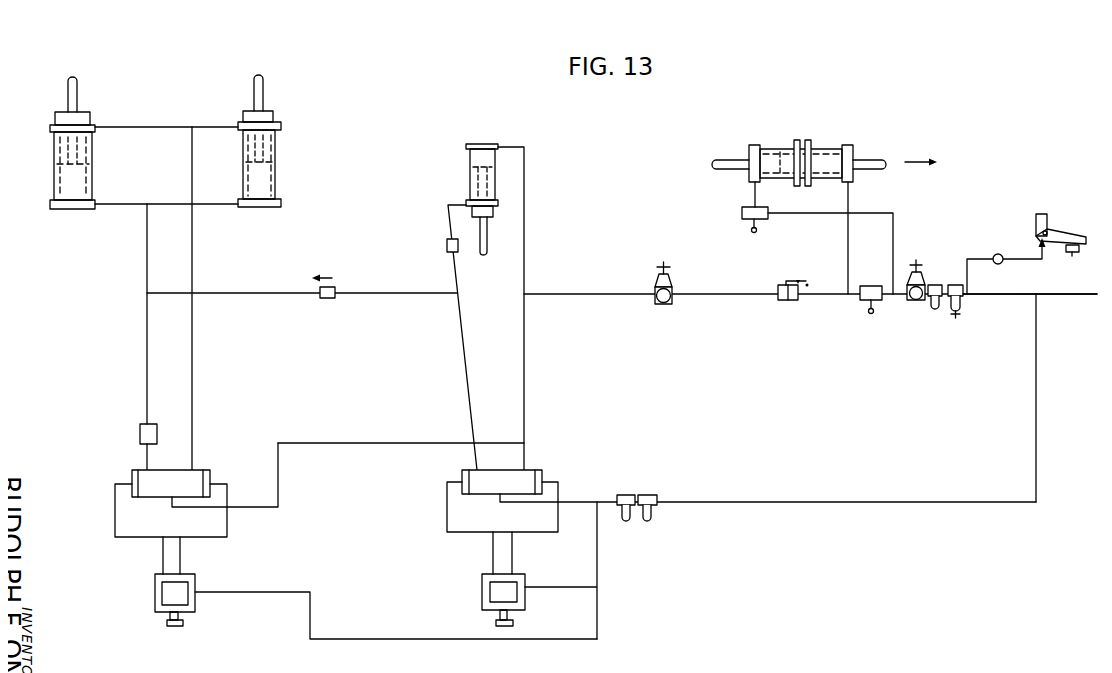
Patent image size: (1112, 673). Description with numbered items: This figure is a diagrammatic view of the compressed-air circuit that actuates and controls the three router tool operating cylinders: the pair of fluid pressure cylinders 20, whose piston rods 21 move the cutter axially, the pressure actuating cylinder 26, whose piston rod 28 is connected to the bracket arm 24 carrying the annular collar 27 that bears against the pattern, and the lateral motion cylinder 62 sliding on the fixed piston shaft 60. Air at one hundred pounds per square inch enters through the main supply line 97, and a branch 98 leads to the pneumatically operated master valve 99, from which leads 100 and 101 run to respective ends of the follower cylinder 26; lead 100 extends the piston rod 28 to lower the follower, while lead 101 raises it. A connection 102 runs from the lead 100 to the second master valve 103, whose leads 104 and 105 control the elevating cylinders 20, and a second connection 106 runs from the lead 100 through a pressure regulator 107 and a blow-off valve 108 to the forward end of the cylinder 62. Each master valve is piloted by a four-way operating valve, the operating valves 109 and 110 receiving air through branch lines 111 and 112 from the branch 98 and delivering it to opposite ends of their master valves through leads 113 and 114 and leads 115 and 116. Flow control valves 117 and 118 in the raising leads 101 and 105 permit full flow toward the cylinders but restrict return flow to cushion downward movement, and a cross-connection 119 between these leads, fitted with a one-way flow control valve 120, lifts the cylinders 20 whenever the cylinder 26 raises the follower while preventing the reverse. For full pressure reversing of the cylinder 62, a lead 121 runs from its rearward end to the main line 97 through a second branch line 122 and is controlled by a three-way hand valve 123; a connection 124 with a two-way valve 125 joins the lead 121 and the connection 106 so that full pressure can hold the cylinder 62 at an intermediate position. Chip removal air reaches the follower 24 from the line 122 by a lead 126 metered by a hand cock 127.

The fluid pressure cylinders 20 is at (55, 178).
The piston rods 21 is at (77, 98).
The bracket arm 24 is at (1050, 226).
The pressure actuating cylinder 26 is at (470, 156).
The annular collar 27 is at (1071, 255).
The piston rod 28 is at (484, 230).
The fixed piston shaft 60 is at (869, 160).
The cylinder 62 is at (830, 145).
The main supply line 97 is at (1079, 294).
The branch 98 is at (1036, 381).
The master valve 99 is at (528, 475).
The lead 100 is at (526, 368).
The lead 101 is at (465, 374).
The connection 102 is at (366, 444).
The second master valve 103 is at (194, 471).
The lead 104 is at (194, 377).
The lead 105 is at (146, 379).
The second connection 106 is at (712, 292).
The pressure regulator 107 is at (663, 303).
The blow-off valve 108 is at (790, 299).
The operating valve 109 is at (526, 581).
The operating valve 110 is at (196, 583).
The branch line 111 is at (558, 588).
The branch line 112 is at (383, 639).
The lead 113 is at (447, 520).
The lead 114 is at (558, 493).
The lead 115 is at (118, 530).
The lead 116 is at (228, 530).
The flow control valve 117 is at (447, 243).
The flow control valve 118 is at (140, 432).
The cross-connection 119 is at (372, 298).
The one-way flow control valve 120 is at (322, 297).
The lead 121 is at (893, 230).
The second branch line 122 is at (991, 293).
The three-way hand valve 123 is at (742, 211).
The connection 124 is at (848, 293).
The two-way valve 125 is at (868, 283).
The lead 126 is at (978, 260).
The hand cock 127 is at (998, 252).